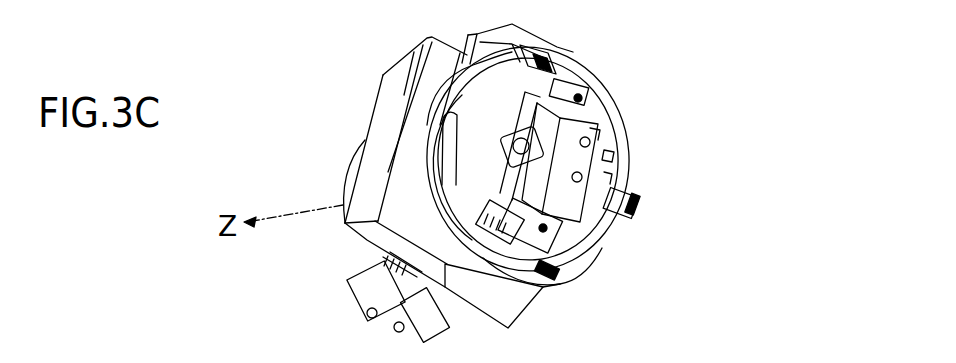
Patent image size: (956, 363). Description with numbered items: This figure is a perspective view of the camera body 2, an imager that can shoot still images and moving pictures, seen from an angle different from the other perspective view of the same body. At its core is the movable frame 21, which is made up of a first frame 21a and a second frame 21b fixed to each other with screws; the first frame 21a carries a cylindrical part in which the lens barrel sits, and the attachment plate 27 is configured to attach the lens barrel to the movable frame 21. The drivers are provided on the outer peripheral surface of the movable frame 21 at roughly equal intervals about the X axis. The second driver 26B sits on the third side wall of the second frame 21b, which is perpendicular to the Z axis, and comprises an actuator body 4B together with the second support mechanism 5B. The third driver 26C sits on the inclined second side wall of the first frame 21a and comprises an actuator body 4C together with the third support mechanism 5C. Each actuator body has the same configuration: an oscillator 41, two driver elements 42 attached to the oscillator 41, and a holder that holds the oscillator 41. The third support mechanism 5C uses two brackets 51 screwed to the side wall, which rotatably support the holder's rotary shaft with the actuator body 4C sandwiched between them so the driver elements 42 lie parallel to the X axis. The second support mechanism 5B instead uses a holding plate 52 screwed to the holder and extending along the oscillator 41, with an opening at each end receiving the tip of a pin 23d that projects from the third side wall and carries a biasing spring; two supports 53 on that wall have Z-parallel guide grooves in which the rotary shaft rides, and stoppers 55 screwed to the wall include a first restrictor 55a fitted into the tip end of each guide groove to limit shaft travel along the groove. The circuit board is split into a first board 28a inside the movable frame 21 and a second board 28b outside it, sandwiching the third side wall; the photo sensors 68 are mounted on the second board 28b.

The camera body 2 is at (750, 108).
The movable frame 21 is at (603, 303).
The first frame 21a is at (540, 308).
The second frame 21b is at (510, 291).
The pin 23d is at (590, 108).
The second driver 26B is at (606, 226).
The third driver 26C is at (309, 289).
The attachment plate 27 is at (427, 95).
The first board 28a is at (453, 97).
The second board 28b is at (465, 138).
The oscillator 41 is at (612, 156).
The driver element 42 is at (583, 174).
The actuator body 4B is at (585, 225).
The actuator body 4C is at (355, 304).
The bracket 51 is at (415, 324).
The holding plate 52 is at (592, 98).
The support 53 is at (597, 118).
The stopper 55 is at (533, 112).
The first restrictor 55a is at (593, 132).
The second support mechanism 5B is at (577, 84).
The third support mechanism 5C is at (445, 337).
The photo sensor 68 is at (538, 50).